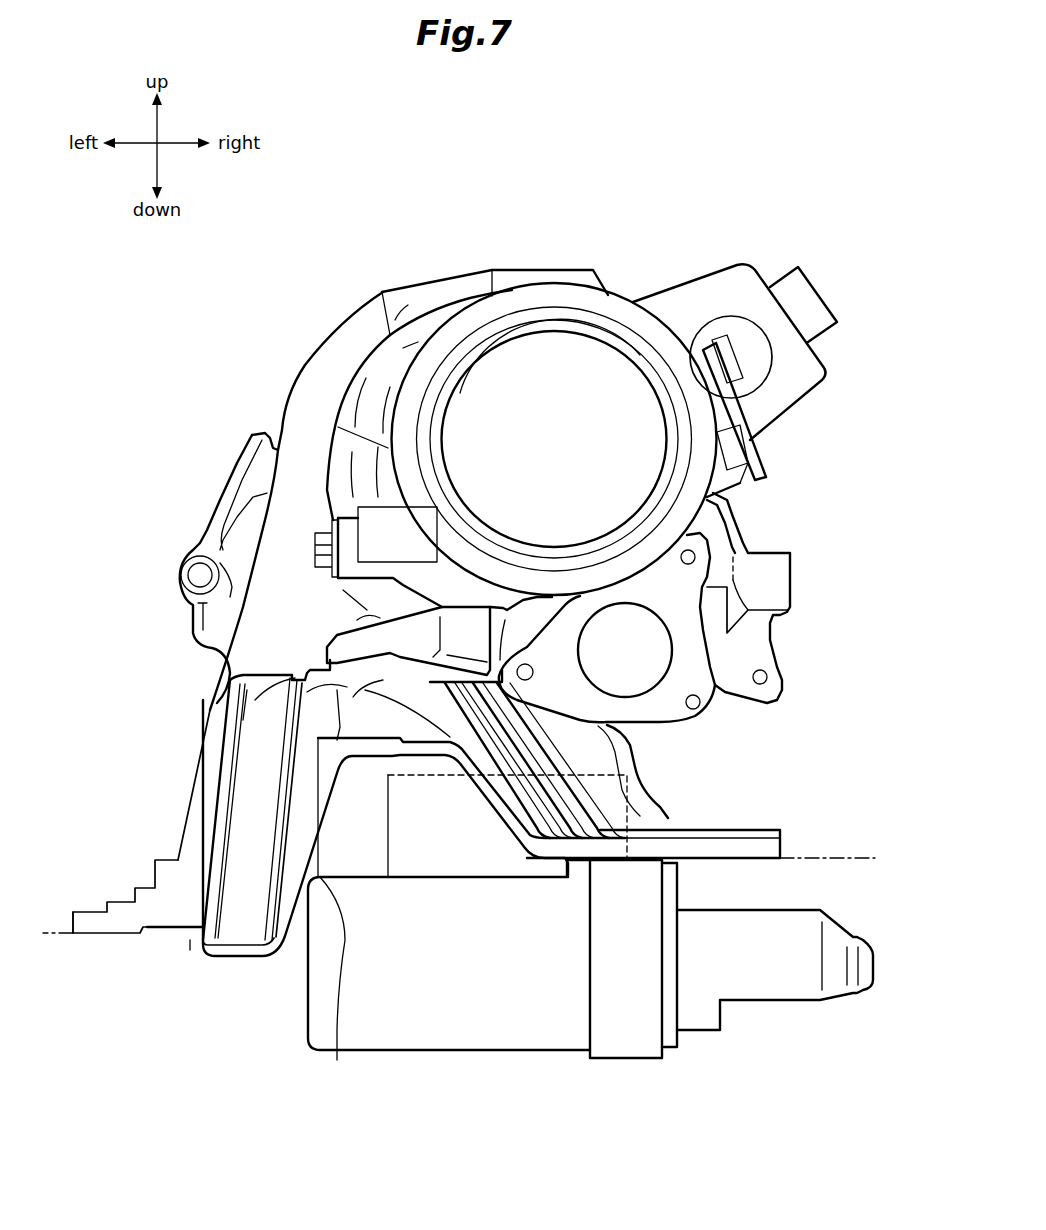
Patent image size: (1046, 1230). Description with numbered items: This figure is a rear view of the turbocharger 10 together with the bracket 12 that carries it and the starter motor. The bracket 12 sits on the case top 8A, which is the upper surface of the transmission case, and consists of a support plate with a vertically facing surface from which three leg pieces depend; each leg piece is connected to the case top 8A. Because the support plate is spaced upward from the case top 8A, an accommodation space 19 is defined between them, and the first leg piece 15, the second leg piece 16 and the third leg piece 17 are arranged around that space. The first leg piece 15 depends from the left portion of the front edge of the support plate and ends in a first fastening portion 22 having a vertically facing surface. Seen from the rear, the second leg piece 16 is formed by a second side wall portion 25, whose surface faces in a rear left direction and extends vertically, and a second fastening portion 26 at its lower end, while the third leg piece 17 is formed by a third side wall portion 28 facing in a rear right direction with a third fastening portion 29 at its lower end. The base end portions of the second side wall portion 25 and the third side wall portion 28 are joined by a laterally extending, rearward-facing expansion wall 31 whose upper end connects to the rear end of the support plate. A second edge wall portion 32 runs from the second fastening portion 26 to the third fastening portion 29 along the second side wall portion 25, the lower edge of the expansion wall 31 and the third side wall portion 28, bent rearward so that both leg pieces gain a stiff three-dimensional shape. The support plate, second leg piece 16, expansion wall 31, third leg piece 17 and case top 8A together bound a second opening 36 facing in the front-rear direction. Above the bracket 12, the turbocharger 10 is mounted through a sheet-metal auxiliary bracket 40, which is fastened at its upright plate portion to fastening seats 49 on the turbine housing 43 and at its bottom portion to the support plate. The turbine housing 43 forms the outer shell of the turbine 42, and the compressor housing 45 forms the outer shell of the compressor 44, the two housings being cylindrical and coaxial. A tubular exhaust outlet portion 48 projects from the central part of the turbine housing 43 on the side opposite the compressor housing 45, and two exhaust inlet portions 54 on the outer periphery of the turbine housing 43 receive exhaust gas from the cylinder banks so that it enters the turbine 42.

The turbocharger 10 is at (543, 228).
The exhaust outlet portion 48 is at (553, 313).
The turbine 42 is at (627, 297).
The turbine housing 43 is at (407, 340).
The compressor 44 is at (331, 338).
The compressor housing 45 is at (300, 410).
The fastening seats 49 is at (508, 618).
The auxiliary bracket 40 is at (330, 637).
The exhaust inlet portions 54 is at (763, 660).
The third side wall portion 28 is at (640, 797).
The third leg piece 17 is at (655, 811).
The third fastening portion 29 is at (767, 847).
The case top 8A is at (853, 857).
The second leg piece 16 is at (272, 975).
The second side wall portion 25 is at (243, 787).
The second fastening portion 26 is at (228, 953).
The bracket 12 is at (203, 972).
The first leg piece 15 is at (140, 857).
The first fastening portion 22 is at (90, 917).
The accommodation space 19 is at (367, 830).
The expansion wall 31 is at (400, 715).
The second opening 36 is at (337, 1060).
The second edge wall portion 32 is at (500, 817).